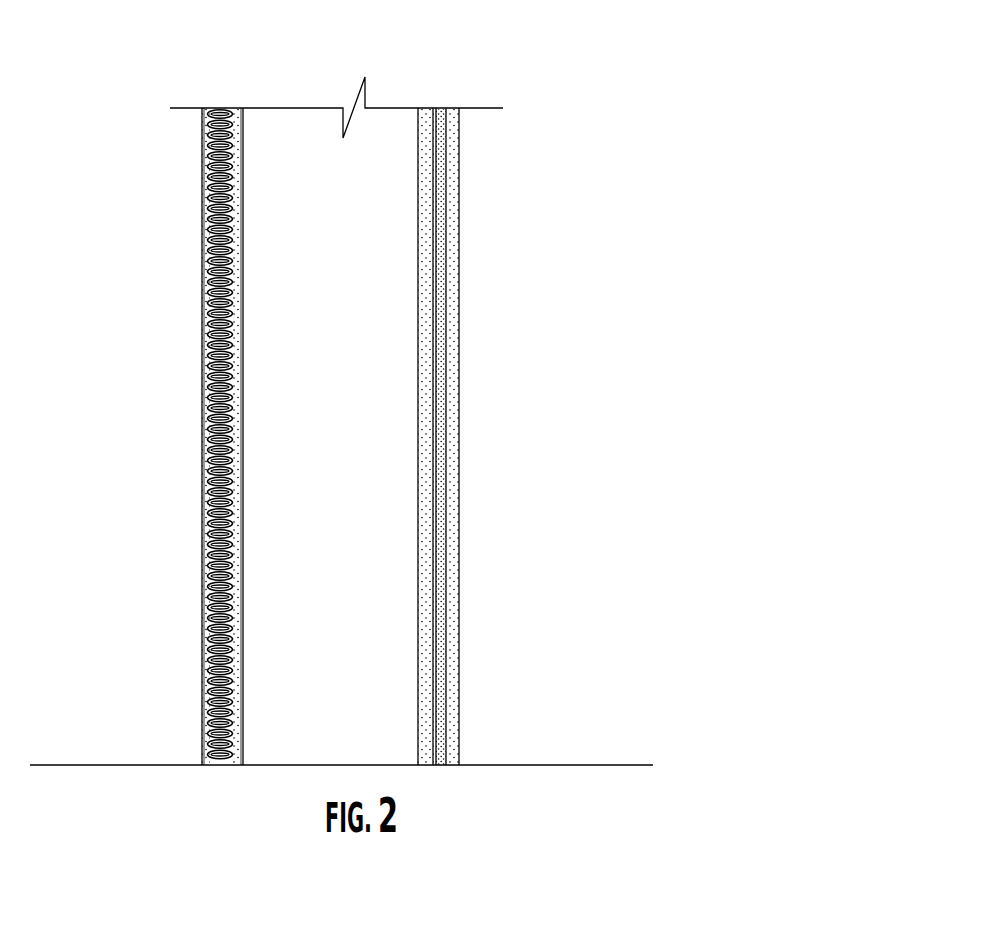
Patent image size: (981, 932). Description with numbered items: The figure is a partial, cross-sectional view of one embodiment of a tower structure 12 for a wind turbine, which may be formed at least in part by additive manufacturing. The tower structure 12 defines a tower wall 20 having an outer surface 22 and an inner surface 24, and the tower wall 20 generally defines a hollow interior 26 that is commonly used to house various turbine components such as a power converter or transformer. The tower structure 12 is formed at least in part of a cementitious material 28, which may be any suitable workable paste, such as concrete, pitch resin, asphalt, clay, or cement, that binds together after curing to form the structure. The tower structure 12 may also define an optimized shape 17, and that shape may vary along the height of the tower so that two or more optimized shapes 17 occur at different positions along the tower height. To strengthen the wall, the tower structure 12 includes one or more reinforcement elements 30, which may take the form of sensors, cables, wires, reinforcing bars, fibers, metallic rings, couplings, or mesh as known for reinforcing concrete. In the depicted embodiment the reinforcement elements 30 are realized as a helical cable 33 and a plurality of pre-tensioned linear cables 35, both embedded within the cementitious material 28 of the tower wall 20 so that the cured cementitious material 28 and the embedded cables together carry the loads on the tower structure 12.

The tower structure 12 is at (566, 117).
The optimized shape 17 is at (466, 552).
The tower wall 20 is at (197, 539).
The outer surface 22 is at (205, 652).
The inner surface 24 is at (245, 709).
The hollow interior 26 is at (333, 453).
The cementitious material 28 is at (208, 295).
The reinforcement element 30 is at (207, 430).
The helical cable 33 is at (228, 339).
The pre-tensioned linear cables 35 is at (435, 467).